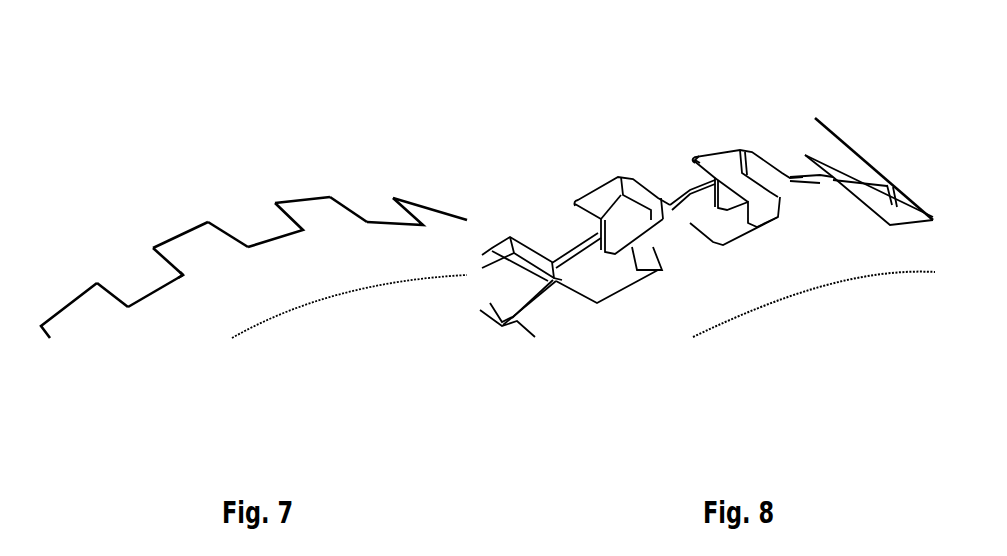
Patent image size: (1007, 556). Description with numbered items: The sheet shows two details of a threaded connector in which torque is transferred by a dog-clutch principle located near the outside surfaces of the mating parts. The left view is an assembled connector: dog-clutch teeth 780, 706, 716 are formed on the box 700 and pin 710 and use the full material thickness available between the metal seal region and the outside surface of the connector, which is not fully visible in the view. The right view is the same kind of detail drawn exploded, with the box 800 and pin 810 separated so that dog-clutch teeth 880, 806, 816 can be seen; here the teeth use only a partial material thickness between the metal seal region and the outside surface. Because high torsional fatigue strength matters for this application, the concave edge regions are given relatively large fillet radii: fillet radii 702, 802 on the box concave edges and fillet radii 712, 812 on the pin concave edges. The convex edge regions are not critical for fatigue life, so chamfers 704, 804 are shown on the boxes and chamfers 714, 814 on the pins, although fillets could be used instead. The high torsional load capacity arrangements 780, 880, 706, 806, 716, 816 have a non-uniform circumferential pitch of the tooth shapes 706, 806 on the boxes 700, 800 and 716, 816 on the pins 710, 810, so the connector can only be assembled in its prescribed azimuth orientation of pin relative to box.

In FIG. 7, the box 700 is at (166, 308).
In FIG. 7, the fillet radius 702 is at (183, 276).
In FIG. 7, the chamfer 704 is at (330, 197).
In FIG. 7, the dog-clutch tooth 706 is at (442, 218).
In FIG. 7, the pin 710 is at (302, 182).
In FIG. 7, the fillet radius 712 is at (278, 203).
In FIG. 7, the chamfer 714 is at (127, 303).
In FIG. 7, the dog-clutch tooth 716 is at (440, 203).
In FIG. 7, the dog-clutch tooth 780 is at (160, 293).
In FIG. 8, the box 800 is at (651, 307).
In FIG. 8, the fillet radius 802 is at (660, 270).
In FIG. 8, the chamfer 804 is at (799, 202).
In FIG. 8, the dog-clutch tooth 806 is at (913, 222).
In FIG. 8, the pin 810 is at (739, 128).
In FIG. 8, the fillet radius 812 is at (740, 177).
In FIG. 8, the chamfer 814 is at (548, 258).
In FIG. 8, the dog-clutch tooth 816 is at (840, 168).
In FIG. 8, the dog-clutch tooth 880 is at (598, 272).